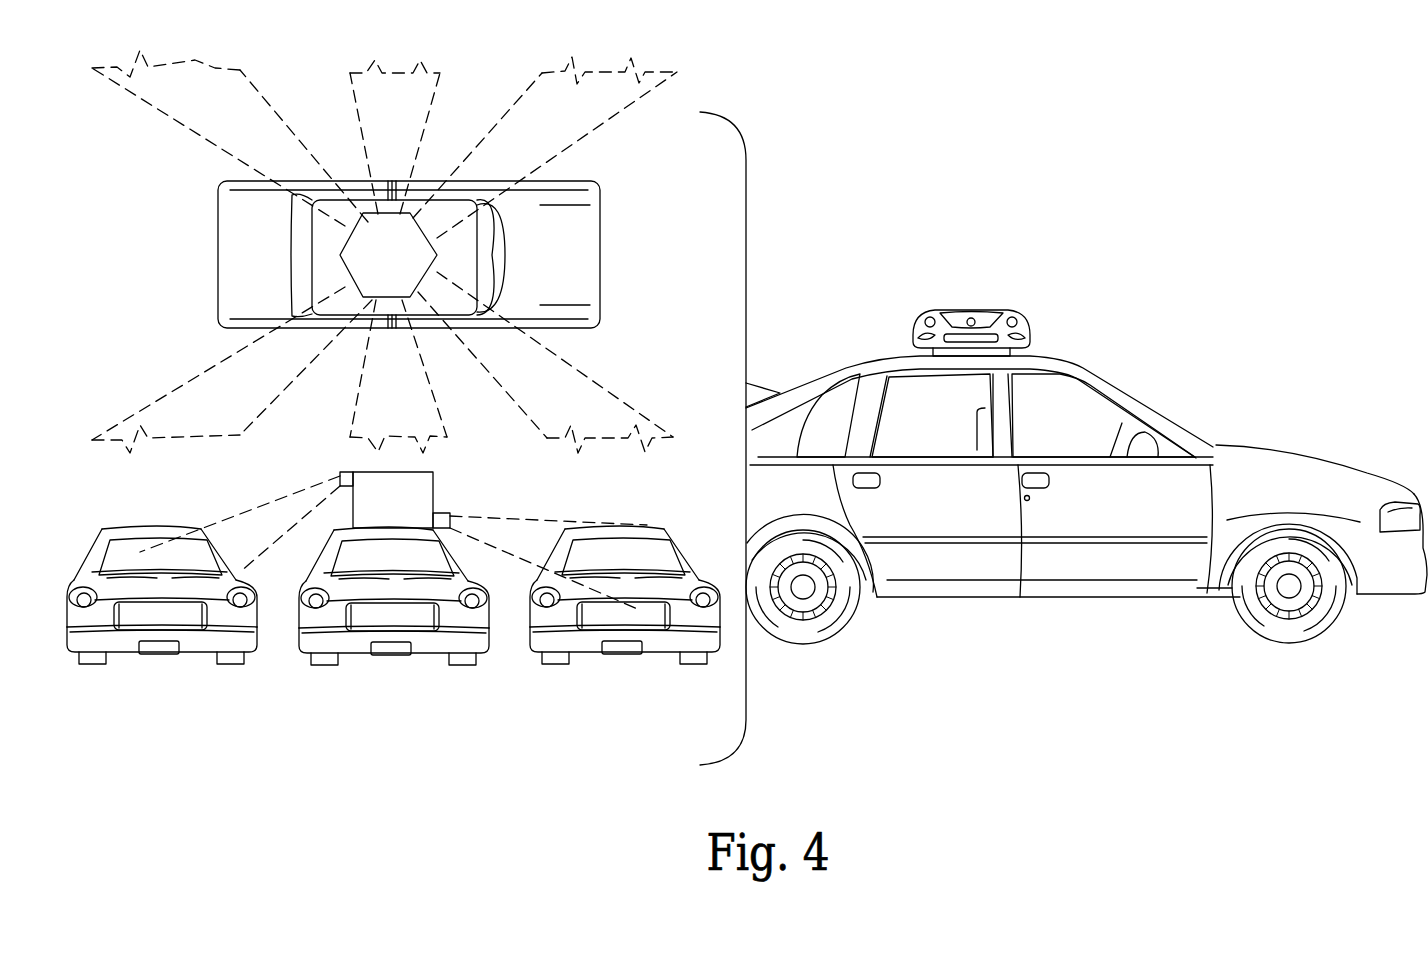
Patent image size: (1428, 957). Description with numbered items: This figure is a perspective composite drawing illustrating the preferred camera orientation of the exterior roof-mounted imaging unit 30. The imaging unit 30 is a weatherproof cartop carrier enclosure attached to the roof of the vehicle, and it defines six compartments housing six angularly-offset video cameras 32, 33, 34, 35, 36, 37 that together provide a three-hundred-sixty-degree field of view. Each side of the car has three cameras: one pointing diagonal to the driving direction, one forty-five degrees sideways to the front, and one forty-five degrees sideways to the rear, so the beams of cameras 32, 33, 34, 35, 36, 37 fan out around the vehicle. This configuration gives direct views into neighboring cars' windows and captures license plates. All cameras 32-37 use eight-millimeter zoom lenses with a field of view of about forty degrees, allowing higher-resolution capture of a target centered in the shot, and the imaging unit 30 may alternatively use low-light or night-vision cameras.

The roof-mounted imaging unit 30 is at (376, 268).
The video camera 32 is at (545, 147).
The video camera 33 is at (545, 362).
The video camera 34 is at (398, 376).
The video camera 35 is at (232, 370).
The video camera 36 is at (230, 138).
The video camera 37 is at (395, 137).